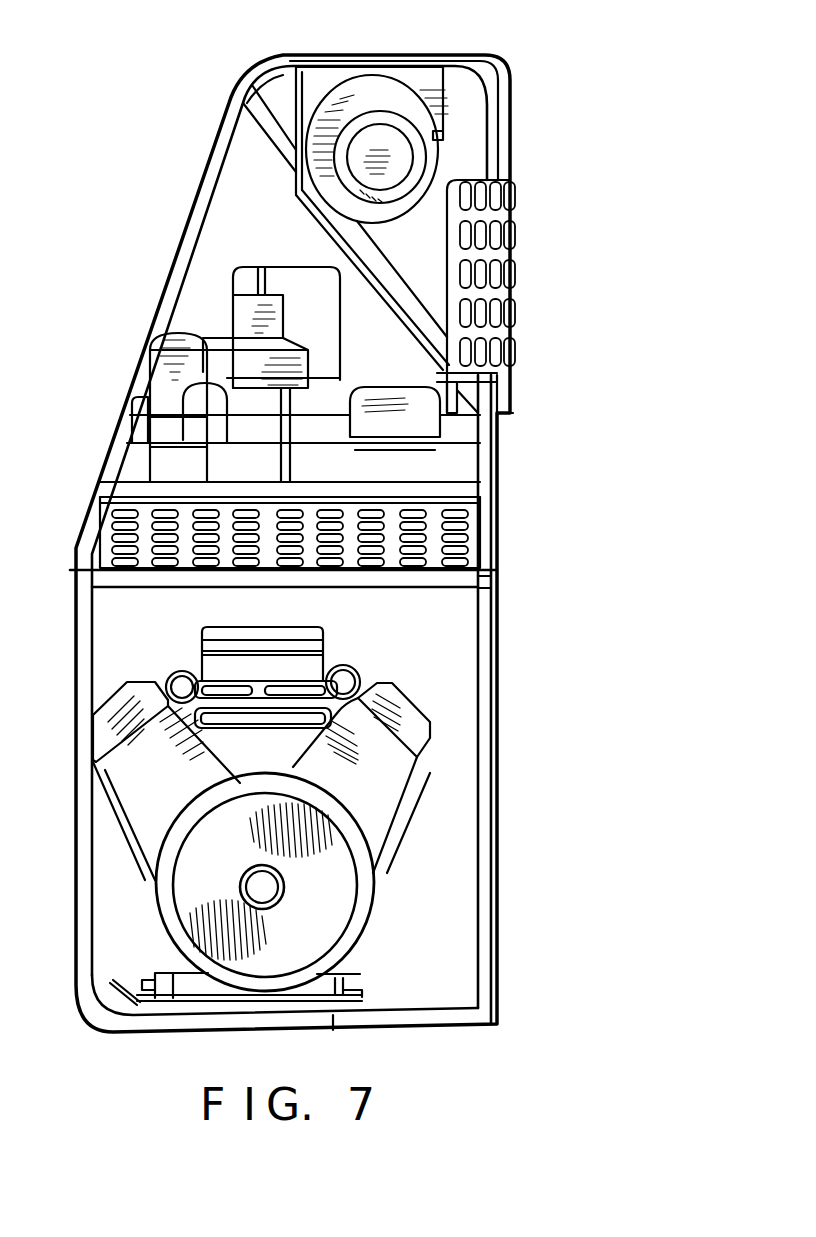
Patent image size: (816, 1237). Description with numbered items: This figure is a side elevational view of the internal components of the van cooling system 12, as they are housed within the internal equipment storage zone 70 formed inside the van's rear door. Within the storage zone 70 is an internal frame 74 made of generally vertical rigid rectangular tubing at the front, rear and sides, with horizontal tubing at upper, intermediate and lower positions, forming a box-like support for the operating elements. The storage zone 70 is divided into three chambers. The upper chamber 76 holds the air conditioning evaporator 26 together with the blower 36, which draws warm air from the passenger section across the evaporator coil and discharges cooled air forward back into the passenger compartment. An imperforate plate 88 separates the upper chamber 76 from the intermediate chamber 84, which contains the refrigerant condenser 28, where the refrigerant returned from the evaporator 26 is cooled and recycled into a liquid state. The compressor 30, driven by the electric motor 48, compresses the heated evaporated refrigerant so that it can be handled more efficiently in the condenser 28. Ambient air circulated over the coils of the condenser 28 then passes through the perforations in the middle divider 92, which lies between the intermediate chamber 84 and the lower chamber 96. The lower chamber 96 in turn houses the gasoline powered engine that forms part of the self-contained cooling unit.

The van cooling system 12 is at (578, 128).
The evaporator 26 is at (510, 298).
The condenser 28 is at (485, 572).
The compressor 30 is at (160, 372).
The blower 36 is at (388, 138).
The electric motor 48 is at (227, 380).
The internal equipment storage zone 70 is at (525, 489).
The internal frame 74 is at (92, 656).
The upper chamber 76 is at (252, 176).
The intermediate chamber 84 is at (461, 482).
The imperforate plate 88 is at (248, 102).
The middle divider 92 is at (487, 592).
The lower chamber 96 is at (428, 654).